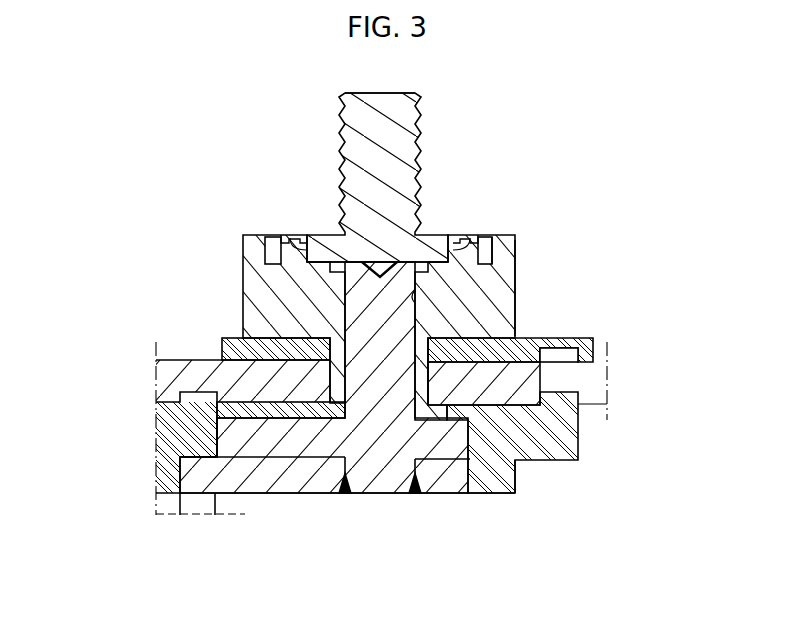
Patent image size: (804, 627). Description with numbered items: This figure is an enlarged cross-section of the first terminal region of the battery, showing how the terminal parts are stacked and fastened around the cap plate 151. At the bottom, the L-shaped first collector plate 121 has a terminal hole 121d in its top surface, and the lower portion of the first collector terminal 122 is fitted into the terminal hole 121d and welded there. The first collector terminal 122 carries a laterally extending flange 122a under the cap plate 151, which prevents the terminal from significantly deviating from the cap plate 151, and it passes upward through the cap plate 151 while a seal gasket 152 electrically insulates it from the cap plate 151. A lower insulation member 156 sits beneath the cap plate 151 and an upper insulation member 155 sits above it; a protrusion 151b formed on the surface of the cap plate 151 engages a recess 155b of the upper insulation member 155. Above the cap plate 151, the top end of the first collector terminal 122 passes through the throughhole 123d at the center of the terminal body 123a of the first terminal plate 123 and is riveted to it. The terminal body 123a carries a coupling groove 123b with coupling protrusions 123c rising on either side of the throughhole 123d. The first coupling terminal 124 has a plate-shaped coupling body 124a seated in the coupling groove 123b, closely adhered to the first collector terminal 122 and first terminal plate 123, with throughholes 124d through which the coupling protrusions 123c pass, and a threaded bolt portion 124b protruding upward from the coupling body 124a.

The first collector plate 121 is at (155, 510).
The terminal hole 121d is at (347, 476).
The first collector terminal 122 is at (383, 455).
The flange 122a is at (262, 440).
The first terminal plate 123 is at (636, 160).
The terminal body 123a is at (507, 257).
The coupling groove 123b is at (441, 265).
The coupling protrusion 123c is at (469, 243).
The throughhole 123d is at (416, 296).
The first coupling terminal 124 is at (182, 97).
The coupling body 124a is at (322, 235).
The bolt portion 124b is at (341, 127).
The throughhole 124d is at (293, 237).
The cap plate 151 is at (163, 377).
The protrusion 151b is at (560, 340).
The seal gasket 152 is at (425, 378).
The upper insulation member 155 is at (220, 350).
The recess 155b is at (560, 353).
The lower insulation member 156 is at (568, 442).